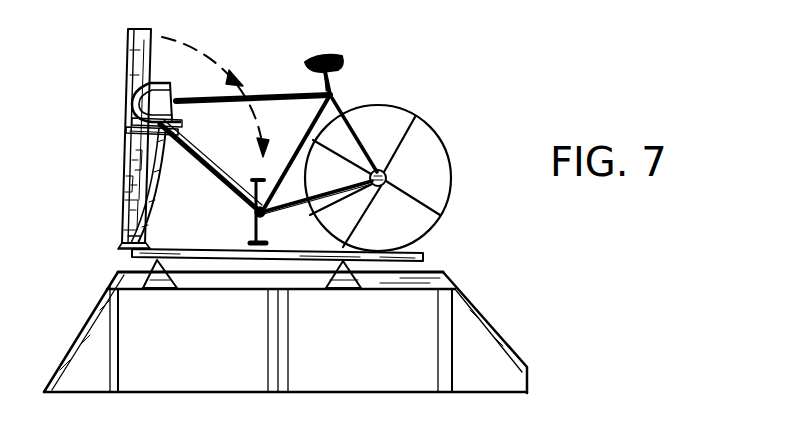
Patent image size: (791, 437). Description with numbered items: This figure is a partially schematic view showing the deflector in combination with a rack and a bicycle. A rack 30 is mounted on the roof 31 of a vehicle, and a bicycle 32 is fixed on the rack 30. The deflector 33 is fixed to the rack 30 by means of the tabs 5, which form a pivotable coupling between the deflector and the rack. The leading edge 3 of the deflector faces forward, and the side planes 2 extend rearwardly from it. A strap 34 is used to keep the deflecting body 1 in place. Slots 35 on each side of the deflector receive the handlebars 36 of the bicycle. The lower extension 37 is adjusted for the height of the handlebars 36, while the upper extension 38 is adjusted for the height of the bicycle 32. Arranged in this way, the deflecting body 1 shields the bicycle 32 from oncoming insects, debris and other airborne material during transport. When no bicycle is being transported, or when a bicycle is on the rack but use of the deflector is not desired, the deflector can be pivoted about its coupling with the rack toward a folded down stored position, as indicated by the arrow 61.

The deflecting body 1 is at (124, 205).
The side planes 2 is at (126, 160).
The leading edge 3 is at (126, 183).
The tabs 5 is at (127, 248).
The rack 30 is at (428, 257).
The roof 31 is at (115, 276).
The bicycle 32 is at (336, 92).
The deflector 33 is at (118, 104).
The strap 34 is at (126, 150).
The slots 35 is at (132, 84).
The handlebars 36 is at (128, 130).
The lower extension 37 is at (118, 226).
The upper extension 38 is at (130, 40).
The arrow 61 is at (207, 57).